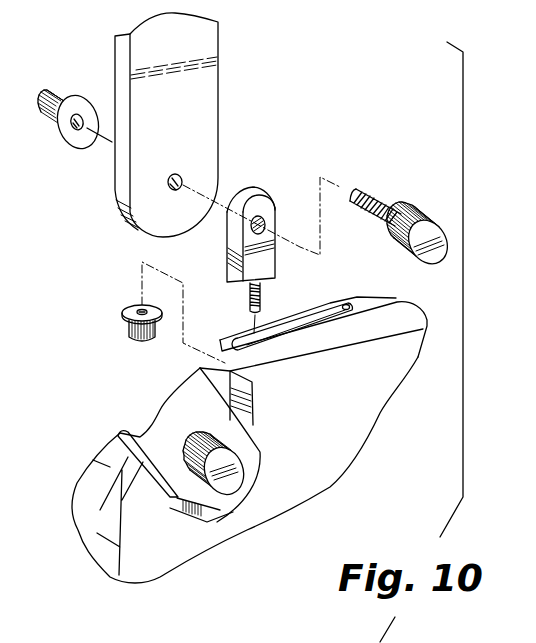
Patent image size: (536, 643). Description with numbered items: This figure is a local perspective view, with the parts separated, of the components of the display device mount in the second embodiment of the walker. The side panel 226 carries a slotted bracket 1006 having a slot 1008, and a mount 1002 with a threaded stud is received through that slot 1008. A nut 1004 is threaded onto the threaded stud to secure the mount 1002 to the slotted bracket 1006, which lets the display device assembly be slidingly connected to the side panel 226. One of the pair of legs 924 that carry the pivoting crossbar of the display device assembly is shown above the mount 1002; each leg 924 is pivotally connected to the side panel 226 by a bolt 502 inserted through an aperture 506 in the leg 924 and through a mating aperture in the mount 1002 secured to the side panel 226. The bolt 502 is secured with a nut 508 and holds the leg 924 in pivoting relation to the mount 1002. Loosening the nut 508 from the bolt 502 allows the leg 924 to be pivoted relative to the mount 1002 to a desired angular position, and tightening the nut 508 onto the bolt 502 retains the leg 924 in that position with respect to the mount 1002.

The side panel 226 is at (249, 415).
The bolt 502 is at (417, 203).
The aperture 506 is at (178, 176).
The nut 508 is at (78, 107).
The leg 924 is at (205, 45).
The mount 1002 is at (252, 190).
The nut 1004 is at (134, 332).
The slotted bracket 1006 is at (357, 305).
The slot 1008 is at (297, 323).